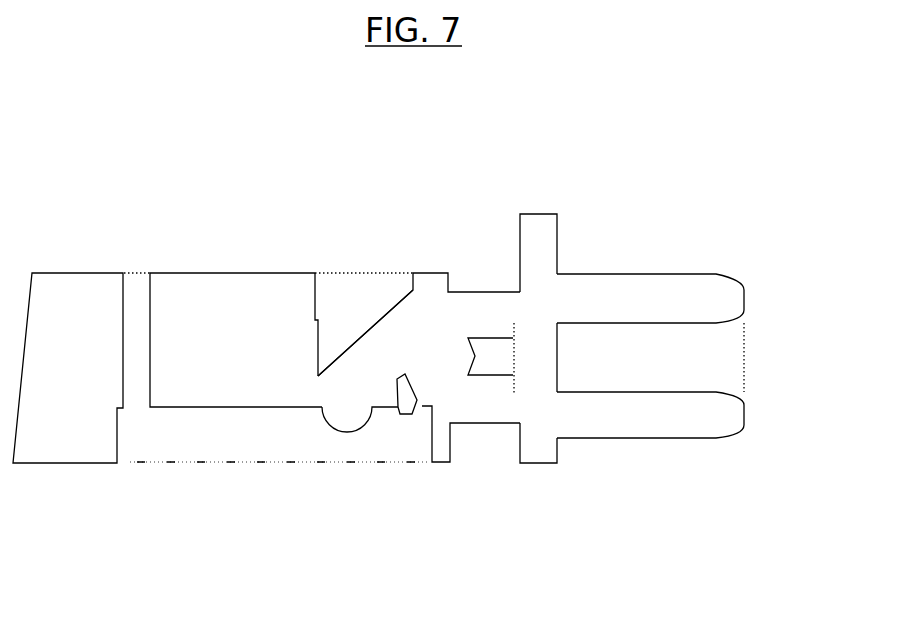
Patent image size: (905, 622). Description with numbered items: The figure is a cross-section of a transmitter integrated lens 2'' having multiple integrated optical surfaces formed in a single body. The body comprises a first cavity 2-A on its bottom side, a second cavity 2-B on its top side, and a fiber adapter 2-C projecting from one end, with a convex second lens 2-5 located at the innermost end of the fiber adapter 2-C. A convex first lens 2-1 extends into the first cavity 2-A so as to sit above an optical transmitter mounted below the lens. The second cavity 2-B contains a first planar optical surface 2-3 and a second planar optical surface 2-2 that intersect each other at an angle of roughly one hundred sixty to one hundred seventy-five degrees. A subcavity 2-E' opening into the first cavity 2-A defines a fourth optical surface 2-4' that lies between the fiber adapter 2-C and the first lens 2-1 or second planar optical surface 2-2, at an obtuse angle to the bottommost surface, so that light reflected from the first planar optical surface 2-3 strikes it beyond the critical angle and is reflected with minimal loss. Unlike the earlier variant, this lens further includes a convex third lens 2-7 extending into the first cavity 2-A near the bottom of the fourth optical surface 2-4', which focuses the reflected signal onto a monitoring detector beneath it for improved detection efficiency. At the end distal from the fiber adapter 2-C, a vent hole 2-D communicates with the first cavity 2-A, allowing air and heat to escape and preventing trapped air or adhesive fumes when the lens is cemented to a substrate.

The transmitter integrated lens 2'' is at (250, 269).
The vent hole 2-D is at (139, 288).
The first cavity 2-A is at (248, 424).
The convex first lens 2-1 is at (396, 491).
The second cavity 2-B is at (353, 234).
The second planar optical surface 2-2 is at (419, 255).
The first planar optical surface 2-3 is at (402, 246).
The fourth optical surface 2-4' is at (499, 255).
The subcavity 2-E' is at (454, 395).
The convex third lens 2-7 is at (470, 485).
The convex second lens 2-5 is at (606, 317).
The fiber adapter 2-C is at (701, 356).